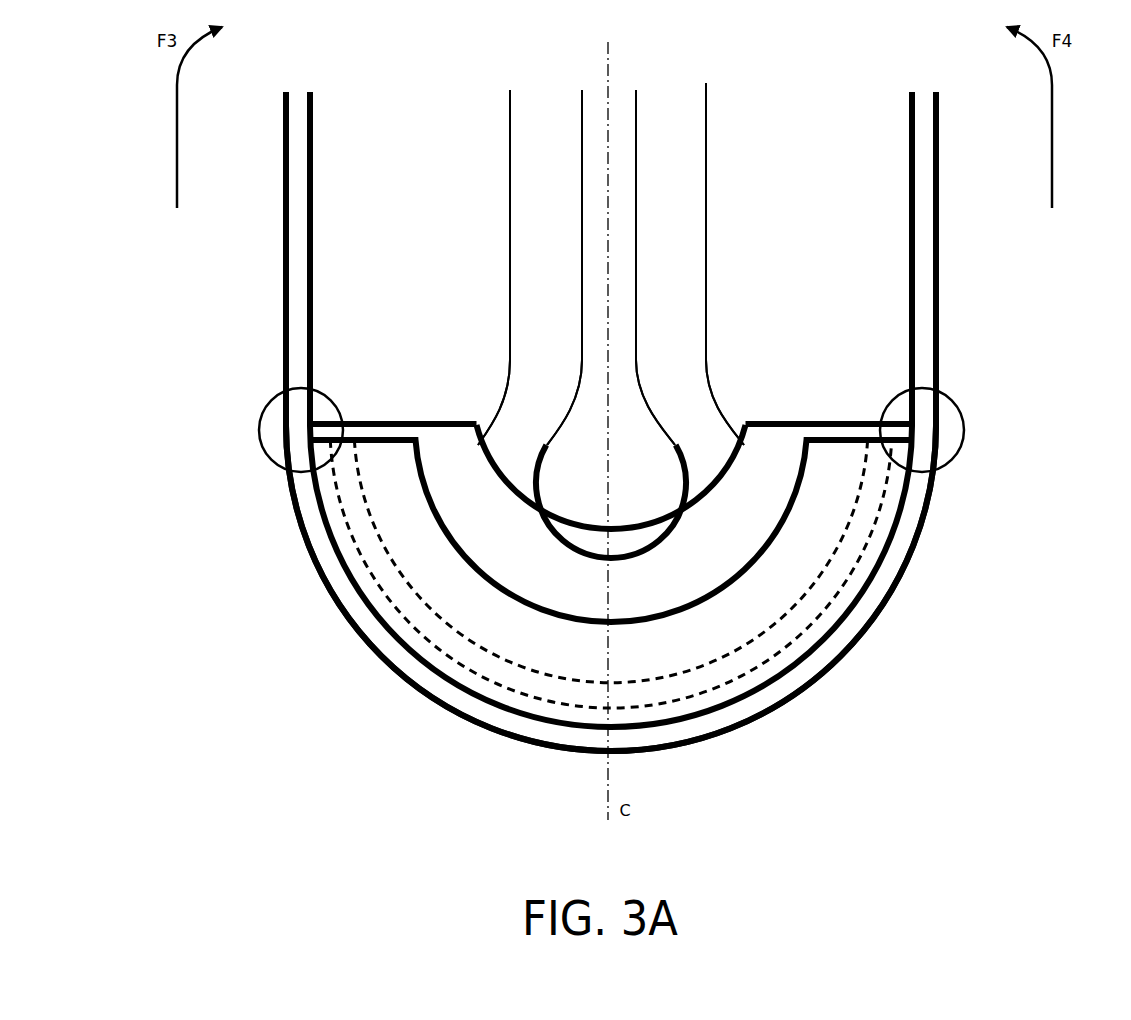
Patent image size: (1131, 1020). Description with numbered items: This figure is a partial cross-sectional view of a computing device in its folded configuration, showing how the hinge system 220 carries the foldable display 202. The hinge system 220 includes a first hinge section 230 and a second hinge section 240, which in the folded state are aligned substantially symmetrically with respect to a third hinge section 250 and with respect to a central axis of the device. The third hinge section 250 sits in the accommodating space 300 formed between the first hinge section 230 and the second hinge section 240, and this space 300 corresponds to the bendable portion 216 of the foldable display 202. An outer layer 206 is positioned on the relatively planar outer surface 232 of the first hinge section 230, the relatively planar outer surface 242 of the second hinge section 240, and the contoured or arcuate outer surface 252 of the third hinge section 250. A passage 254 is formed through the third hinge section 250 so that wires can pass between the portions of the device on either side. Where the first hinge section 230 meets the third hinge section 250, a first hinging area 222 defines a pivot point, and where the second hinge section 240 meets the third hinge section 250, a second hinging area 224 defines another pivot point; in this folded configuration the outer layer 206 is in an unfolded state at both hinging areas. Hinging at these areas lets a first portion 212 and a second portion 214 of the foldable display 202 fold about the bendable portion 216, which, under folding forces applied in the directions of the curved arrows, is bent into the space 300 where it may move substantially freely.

The foldable display 202 is at (712, 100).
The outer layer 206 is at (402, 667).
The first portion of the foldable display 212 is at (535, 290).
The second portion of the foldable display 214 is at (678, 310).
The bendable portion 216 is at (715, 523).
The hinge system 220 is at (233, 577).
The first hinging area 222 is at (260, 422).
The second hinging area 224 is at (967, 422).
The first hinge section 230 is at (368, 337).
The outer surface of the first hinge section 232 is at (318, 361).
The second hinge section 240 is at (832, 324).
The outer surface of the second hinge section 242 is at (918, 342).
The third hinge section 250 is at (415, 562).
The outer surface of the third hinge section 252 is at (383, 627).
The passage 254 is at (493, 677).
The accommodating space 300 is at (700, 588).